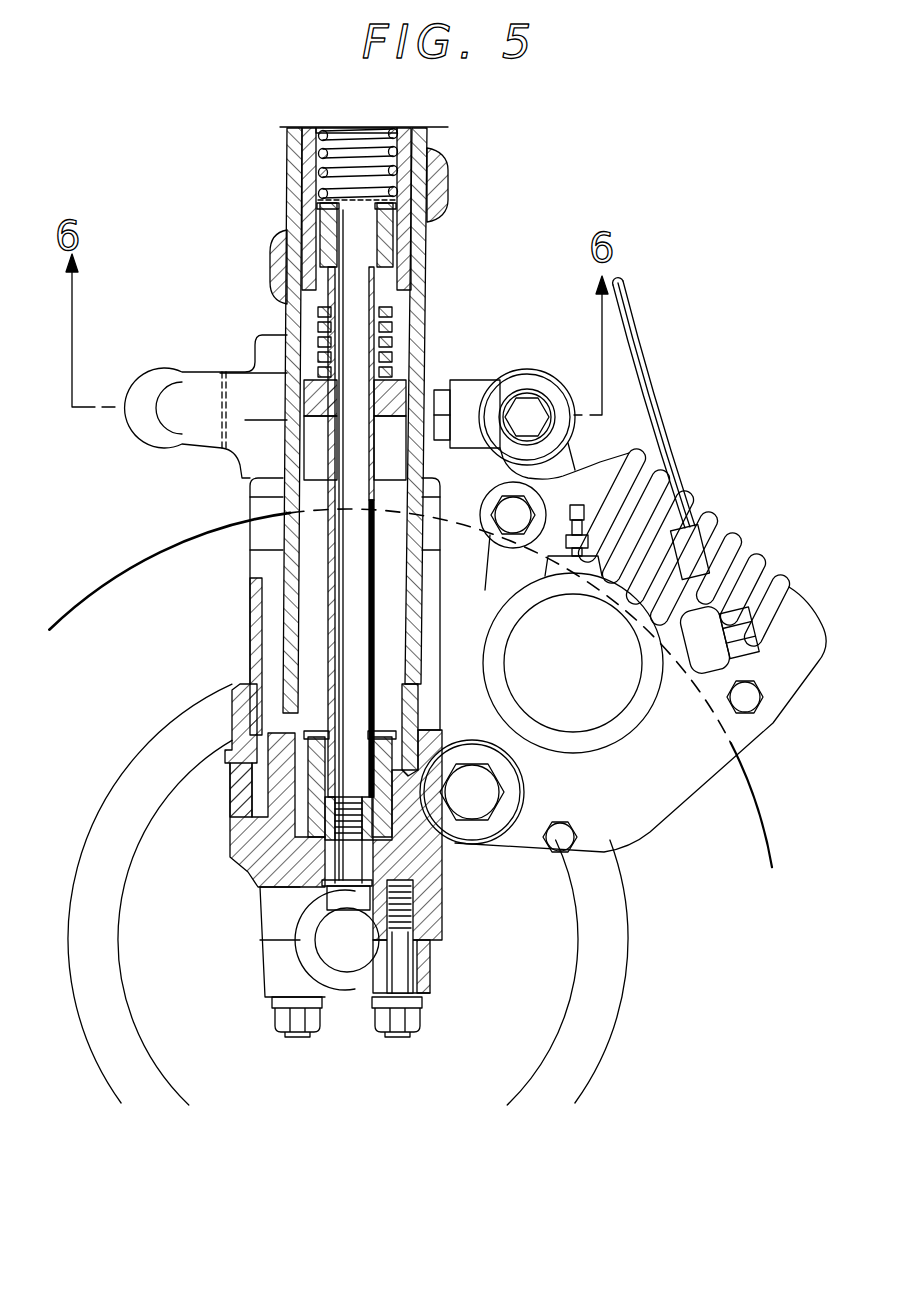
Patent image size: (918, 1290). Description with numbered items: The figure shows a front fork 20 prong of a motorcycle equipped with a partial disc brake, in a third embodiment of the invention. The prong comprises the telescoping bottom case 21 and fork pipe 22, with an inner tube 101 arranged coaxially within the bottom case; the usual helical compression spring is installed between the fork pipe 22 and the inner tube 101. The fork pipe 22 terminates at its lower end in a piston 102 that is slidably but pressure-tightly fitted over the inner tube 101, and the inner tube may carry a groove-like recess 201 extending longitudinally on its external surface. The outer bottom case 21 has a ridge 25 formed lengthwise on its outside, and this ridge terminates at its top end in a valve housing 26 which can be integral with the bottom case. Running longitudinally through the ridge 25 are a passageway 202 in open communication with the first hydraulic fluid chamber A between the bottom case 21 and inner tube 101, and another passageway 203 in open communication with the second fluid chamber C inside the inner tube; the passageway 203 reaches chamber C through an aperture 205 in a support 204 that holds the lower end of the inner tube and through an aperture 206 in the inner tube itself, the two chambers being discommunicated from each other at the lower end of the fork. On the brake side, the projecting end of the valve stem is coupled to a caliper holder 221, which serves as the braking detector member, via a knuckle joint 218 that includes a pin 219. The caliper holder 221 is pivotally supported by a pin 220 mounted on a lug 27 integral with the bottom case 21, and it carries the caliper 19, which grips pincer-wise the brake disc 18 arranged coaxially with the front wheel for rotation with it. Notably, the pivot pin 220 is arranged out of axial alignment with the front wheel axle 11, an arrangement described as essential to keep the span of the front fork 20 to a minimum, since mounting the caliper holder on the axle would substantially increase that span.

The front fork 20 is at (295, 158).
The bottom case 21 is at (293, 212).
The fork pipe 22 is at (403, 155).
The valve housing 26 is at (257, 337).
The piston 102 is at (280, 418).
The inner tube 101 is at (290, 503).
The brake disc 18 is at (112, 594).
The second fluid chamber C is at (353, 550).
The groove-like recess 201 is at (407, 555).
The first hydraulic fluid chamber A is at (400, 595).
The passageway 202 is at (267, 618).
The ridge 25 is at (237, 718).
The support 204 is at (410, 720).
The lug 27 is at (432, 744).
The aperture 206 is at (280, 770).
The passageway 203 is at (260, 805).
The aperture 205 is at (280, 828).
The front wheel axle 11 is at (343, 960).
The knuckle joint 218 is at (475, 390).
The pin 219 is at (537, 420).
The caliper holder 221 is at (470, 630).
The caliper 19 is at (723, 547).
The pin 220 is at (473, 812).